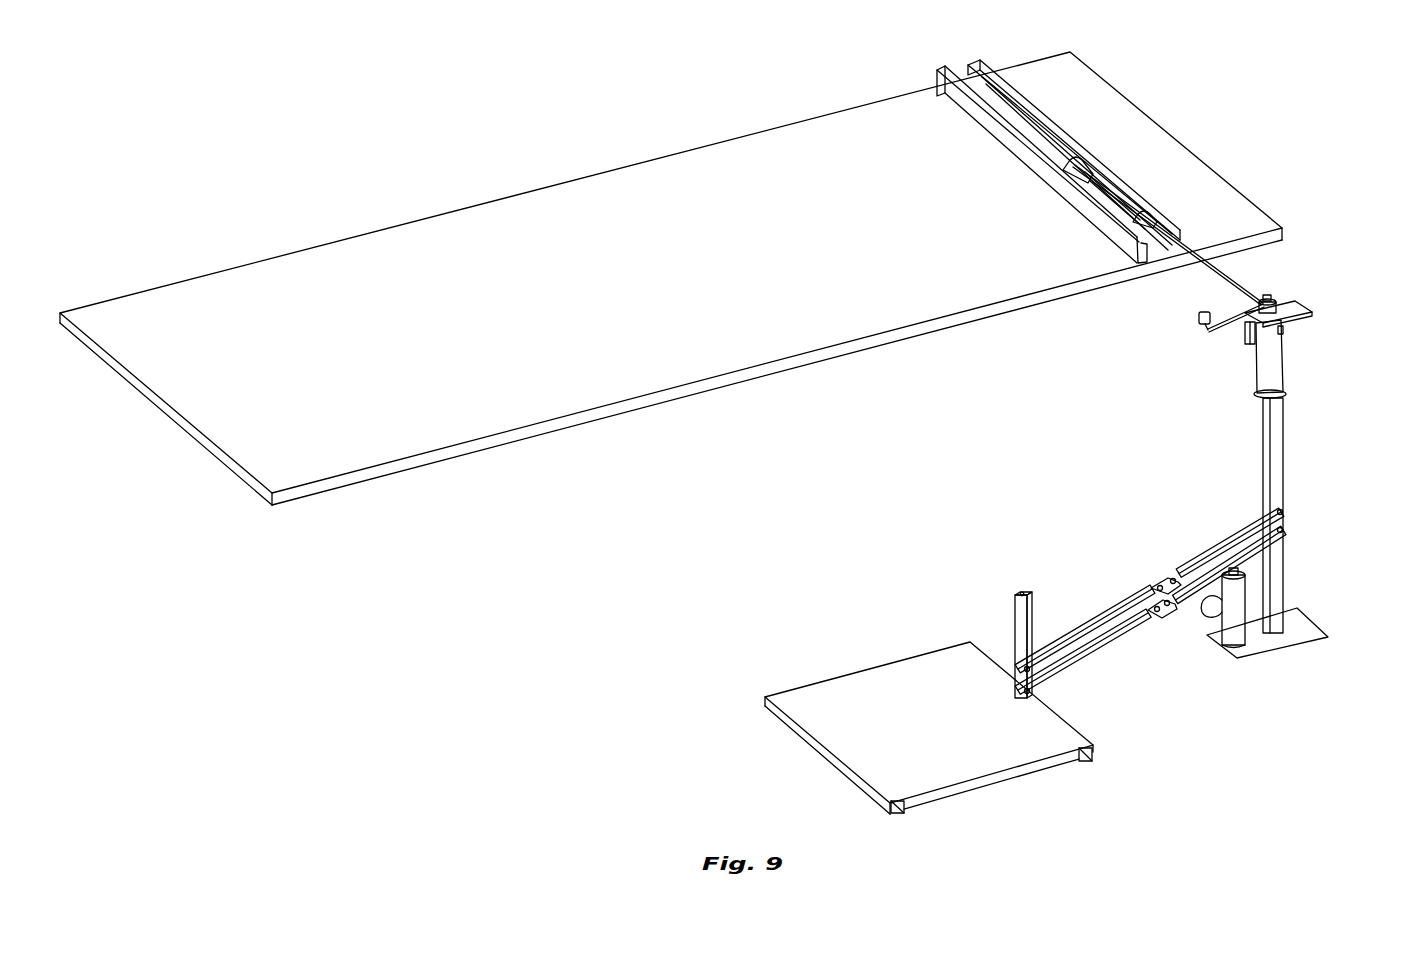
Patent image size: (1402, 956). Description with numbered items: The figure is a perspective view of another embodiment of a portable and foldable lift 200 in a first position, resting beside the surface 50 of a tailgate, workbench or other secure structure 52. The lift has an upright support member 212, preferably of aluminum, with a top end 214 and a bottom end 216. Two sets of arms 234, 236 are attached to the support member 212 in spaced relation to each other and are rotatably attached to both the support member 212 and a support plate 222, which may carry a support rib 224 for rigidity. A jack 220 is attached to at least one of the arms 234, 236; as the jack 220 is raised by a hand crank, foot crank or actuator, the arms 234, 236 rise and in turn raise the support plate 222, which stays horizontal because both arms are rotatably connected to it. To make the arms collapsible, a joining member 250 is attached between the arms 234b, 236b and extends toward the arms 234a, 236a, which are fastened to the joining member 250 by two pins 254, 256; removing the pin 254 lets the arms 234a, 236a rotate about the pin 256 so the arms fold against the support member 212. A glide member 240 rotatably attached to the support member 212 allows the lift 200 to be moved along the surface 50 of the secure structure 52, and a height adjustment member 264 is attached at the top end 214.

The surface 50 is at (684, 278).
The secure structure 52 is at (1197, 155).
The portable and foldable lift 200 is at (1198, 518).
The support member 212 is at (1283, 452).
The top end 214 is at (1283, 393).
The bottom end 216 is at (1297, 620).
The jack 220 is at (1247, 640).
The support plate 222 is at (900, 665).
The support rib 224 is at (1028, 594).
The set of arms 234 is at (1149, 573).
The arm 234a is at (1097, 617).
The arm 234b is at (1251, 518).
The set of arms 236 is at (1189, 668).
The arm 236a is at (1093, 652).
The arm 236b is at (1253, 548).
The glide member 240 is at (1230, 282).
The joining member 250 is at (1210, 547).
The pin 254 is at (1150, 577).
The pin 256 is at (1173, 578).
The height adjustment member 264 is at (1257, 380).